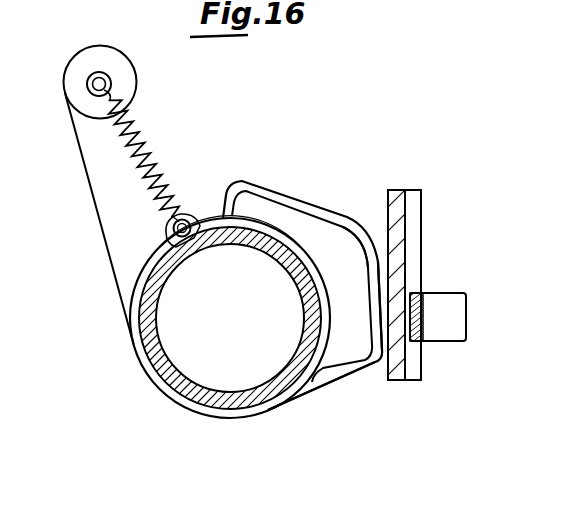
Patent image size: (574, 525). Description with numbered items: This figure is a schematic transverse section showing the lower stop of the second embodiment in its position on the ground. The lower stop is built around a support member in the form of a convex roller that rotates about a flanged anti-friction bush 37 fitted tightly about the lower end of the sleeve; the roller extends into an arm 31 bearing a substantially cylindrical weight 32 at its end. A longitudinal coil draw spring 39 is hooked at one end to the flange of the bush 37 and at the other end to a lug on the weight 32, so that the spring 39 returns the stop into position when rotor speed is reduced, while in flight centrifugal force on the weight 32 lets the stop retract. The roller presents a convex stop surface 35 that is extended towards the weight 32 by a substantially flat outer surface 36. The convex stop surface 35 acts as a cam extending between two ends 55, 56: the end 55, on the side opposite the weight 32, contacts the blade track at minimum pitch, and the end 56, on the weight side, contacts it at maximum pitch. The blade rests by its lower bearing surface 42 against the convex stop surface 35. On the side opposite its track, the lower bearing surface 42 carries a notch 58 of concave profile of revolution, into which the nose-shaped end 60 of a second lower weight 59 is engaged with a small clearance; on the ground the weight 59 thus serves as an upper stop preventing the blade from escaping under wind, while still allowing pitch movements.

The arm 31 is at (122, 213).
The weight 32 is at (123, 70).
The convex stop surface 35 is at (378, 266).
The substantially flat outer surface 36 is at (282, 192).
The flanged anti-friction bush 37 is at (163, 370).
The coil draw spring 39 is at (163, 158).
The lower bearing surface 42 is at (398, 204).
The end of the convex stop surface 55 is at (377, 363).
The end of the convex stop surface 56 is at (348, 220).
The notch 58 is at (410, 210).
The second lower weight 59 is at (453, 310).
The nose-shaped end 60 is at (415, 300).